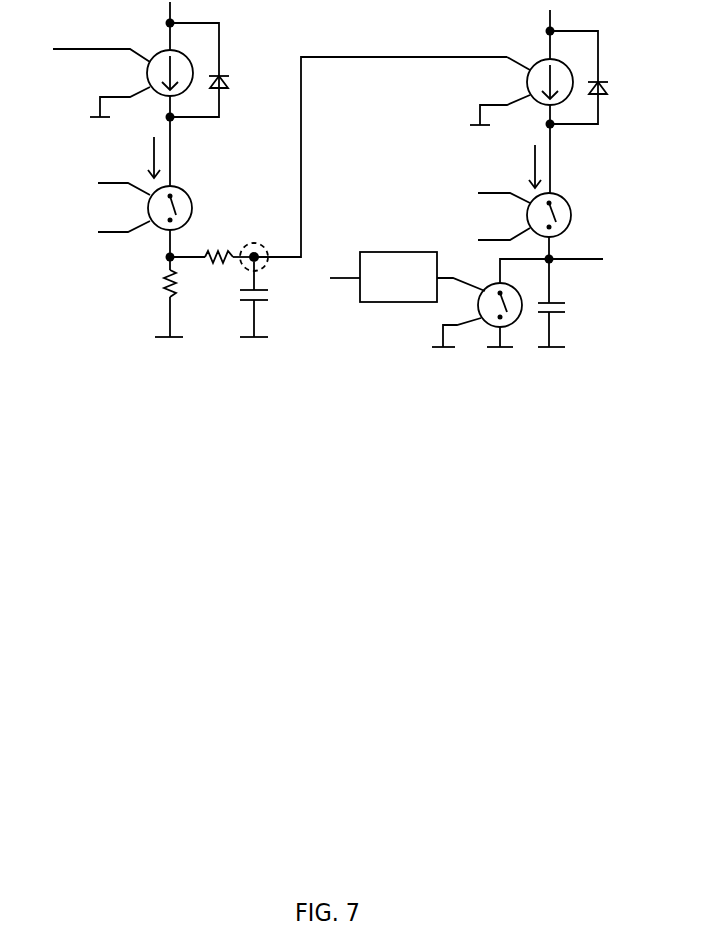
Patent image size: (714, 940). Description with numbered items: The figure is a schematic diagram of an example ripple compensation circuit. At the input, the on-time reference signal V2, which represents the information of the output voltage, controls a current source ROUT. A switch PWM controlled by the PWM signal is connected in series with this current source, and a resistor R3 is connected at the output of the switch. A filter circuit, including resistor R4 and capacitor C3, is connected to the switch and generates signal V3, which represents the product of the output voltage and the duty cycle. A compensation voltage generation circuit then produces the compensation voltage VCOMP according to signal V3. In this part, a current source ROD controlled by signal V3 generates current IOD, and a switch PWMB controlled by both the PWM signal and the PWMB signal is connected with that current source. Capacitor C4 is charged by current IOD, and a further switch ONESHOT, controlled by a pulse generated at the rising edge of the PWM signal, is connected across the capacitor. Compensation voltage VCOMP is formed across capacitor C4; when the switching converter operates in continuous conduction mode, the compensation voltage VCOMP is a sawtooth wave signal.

The current source controlled by on-time reference signal ROUT is at (157, 94).
The on-time reference signal V2 is at (91, 41).
The switch controlled by signal PWM is at (131, 207).
The resistor R3 is at (155, 303).
The resistor R4 is at (212, 242).
The signal V3 is at (373, 149).
The capacitor C3 is at (272, 299).
The current source controlled by signal V3 ROD is at (539, 101).
The current IOD is at (517, 166).
The switch controlled by signal PWM and signal PWMB is at (439, 213).
The compensation voltage VCOMP is at (562, 268).
The capacitor C4 is at (565, 321).
The switch controlled by a pulse generated at the rising-edge of signal PWM ONESHOT is at (409, 299).